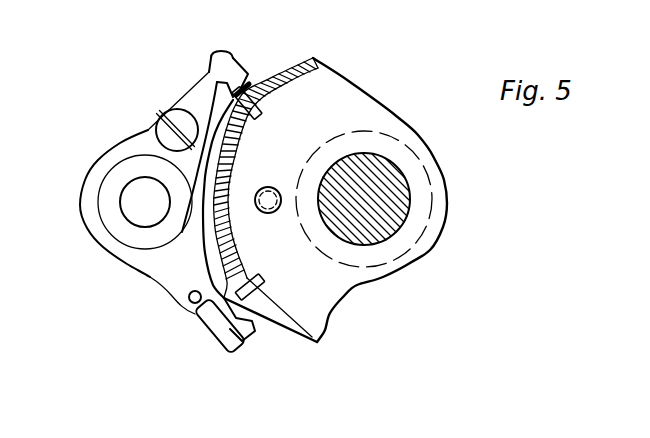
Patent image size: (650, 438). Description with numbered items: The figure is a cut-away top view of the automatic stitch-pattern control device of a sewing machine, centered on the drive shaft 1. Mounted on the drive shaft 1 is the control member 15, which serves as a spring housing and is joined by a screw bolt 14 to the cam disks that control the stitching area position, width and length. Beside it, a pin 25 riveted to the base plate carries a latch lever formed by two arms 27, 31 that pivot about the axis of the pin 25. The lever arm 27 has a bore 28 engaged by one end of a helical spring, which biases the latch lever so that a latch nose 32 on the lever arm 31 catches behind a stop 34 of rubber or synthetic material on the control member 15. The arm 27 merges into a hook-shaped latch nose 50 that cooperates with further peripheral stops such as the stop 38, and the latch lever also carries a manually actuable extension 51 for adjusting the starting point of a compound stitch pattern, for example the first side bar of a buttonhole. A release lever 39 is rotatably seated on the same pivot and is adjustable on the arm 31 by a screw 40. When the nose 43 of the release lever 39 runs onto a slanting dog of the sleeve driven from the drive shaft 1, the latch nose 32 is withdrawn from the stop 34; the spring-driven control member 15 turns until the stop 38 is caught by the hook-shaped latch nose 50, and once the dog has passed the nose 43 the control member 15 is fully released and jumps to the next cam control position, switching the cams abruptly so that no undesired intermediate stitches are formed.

The drive shaft 1 is at (410, 185).
The screw bolt 14 is at (277, 213).
The control member 15 is at (370, 94).
The pin 25 is at (120, 195).
The lever arm 27 is at (150, 280).
The bore 28 is at (188, 298).
The lever arm 31 is at (240, 62).
The latch nose 32 is at (235, 95).
The stop 34 is at (257, 96).
The stop 38 is at (247, 318).
The release lever 39 is at (158, 114).
The screw 40 is at (178, 108).
The nose 43 is at (232, 72).
The hook-shaped latch nose 50 is at (240, 338).
The manually actuable extension 51 is at (203, 337).